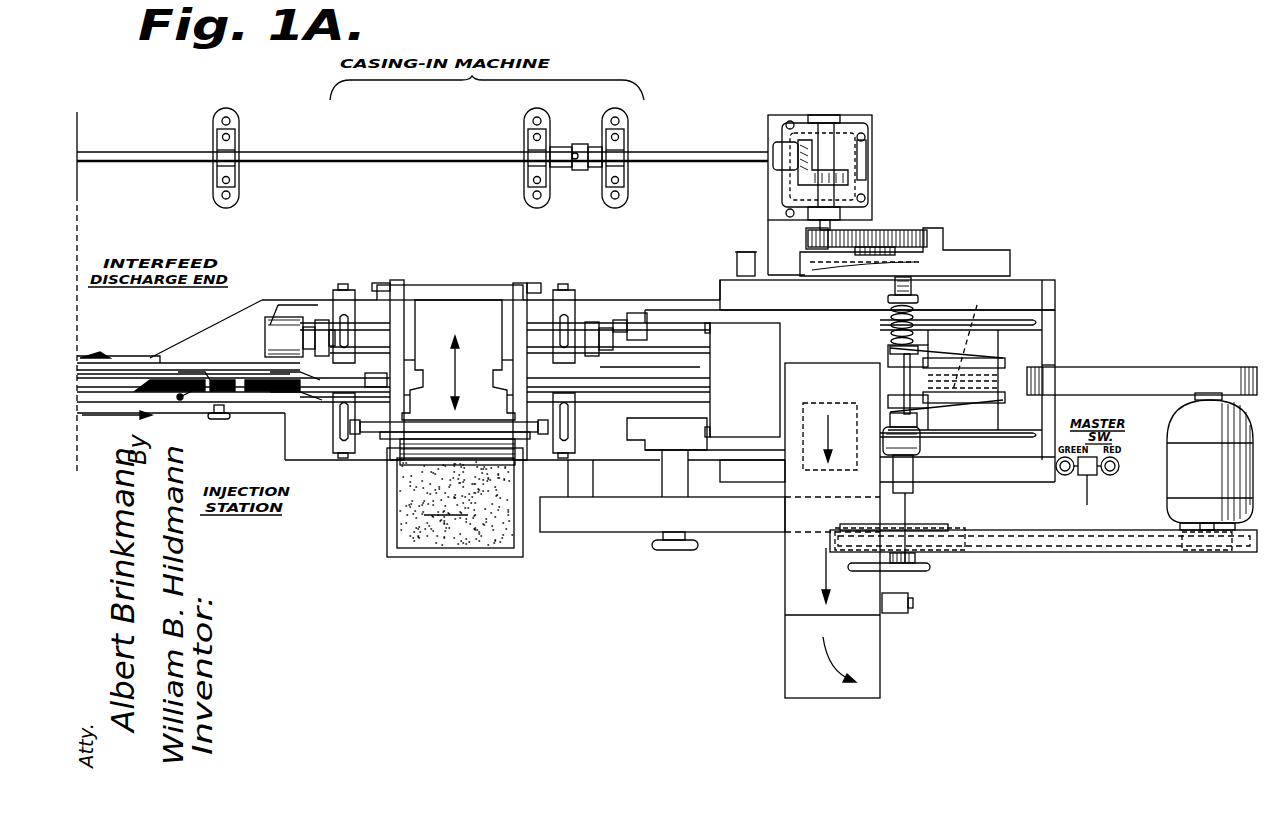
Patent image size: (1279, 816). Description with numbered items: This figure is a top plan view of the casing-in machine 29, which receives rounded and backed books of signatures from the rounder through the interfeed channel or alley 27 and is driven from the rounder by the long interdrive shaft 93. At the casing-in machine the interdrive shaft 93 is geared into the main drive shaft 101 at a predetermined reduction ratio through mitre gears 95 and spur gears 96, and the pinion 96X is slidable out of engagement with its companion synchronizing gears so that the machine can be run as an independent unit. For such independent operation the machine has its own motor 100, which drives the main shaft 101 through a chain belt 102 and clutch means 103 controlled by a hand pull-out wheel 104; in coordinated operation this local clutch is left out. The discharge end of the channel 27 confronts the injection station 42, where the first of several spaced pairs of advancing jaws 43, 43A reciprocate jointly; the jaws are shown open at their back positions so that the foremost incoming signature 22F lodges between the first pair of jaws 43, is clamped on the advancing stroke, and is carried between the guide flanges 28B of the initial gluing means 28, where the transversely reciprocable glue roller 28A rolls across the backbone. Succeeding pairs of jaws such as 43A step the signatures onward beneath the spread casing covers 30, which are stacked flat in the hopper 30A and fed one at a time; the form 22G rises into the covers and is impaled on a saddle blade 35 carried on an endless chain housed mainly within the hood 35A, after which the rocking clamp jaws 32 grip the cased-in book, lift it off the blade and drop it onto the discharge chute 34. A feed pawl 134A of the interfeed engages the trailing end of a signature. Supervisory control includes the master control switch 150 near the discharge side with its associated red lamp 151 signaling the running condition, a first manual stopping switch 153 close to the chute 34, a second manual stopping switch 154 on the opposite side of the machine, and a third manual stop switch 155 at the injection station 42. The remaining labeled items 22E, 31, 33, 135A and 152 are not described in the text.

The interdrive shaft 93 is at (150, 162).
The casing-in machine 29 is at (676, 210).
The mitre gears 95 is at (838, 152).
The spur gears 96 is at (850, 230).
The pinion 96X is at (812, 244).
The main drive shaft 101 is at (905, 252).
The second manual stopping switch 154 is at (737, 262).
The form 22G is at (850, 381).
The advancing jaws 43 is at (338, 302).
The third manual stop switch 155 is at (364, 308).
The advancing jaws 43A is at (565, 325).
The guide flanges 28B is at (418, 392).
The interfeed channel 27 is at (112, 357).
The feed pawl 134A is at (165, 380).
The gripper 135A is at (290, 380).
The conveyor section 22E is at (210, 392).
The incoming signature 22F is at (290, 392).
The injection station 42 is at (332, 460).
The glue roller 28A is at (425, 433).
The gluing unit 28 is at (489, 557).
The hopper 30A is at (830, 350).
The casing guide 31 is at (875, 356).
The plunger 33 is at (916, 376).
The rocking clamp jaws 32 is at (1006, 359).
The saddle blade 35 is at (1012, 376).
The casing covers 30 is at (961, 412).
The hood 35A is at (1125, 380).
The motor 100 is at (1215, 477).
The green lamp 152 is at (1063, 476).
The red lamp 151 is at (1110, 476).
The master control switch 150 is at (1085, 492).
The discharge chute 34 is at (838, 495).
The clutch means 103 is at (930, 527).
The hand pull-out wheel 104 is at (922, 567).
The chain belt 102 is at (1112, 548).
The first manual stopping switch 153 is at (900, 613).